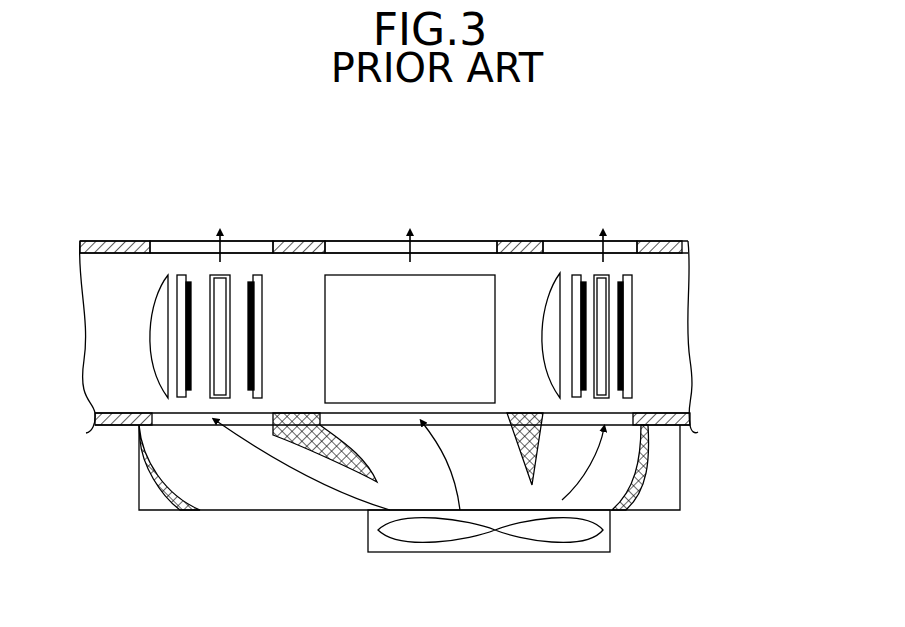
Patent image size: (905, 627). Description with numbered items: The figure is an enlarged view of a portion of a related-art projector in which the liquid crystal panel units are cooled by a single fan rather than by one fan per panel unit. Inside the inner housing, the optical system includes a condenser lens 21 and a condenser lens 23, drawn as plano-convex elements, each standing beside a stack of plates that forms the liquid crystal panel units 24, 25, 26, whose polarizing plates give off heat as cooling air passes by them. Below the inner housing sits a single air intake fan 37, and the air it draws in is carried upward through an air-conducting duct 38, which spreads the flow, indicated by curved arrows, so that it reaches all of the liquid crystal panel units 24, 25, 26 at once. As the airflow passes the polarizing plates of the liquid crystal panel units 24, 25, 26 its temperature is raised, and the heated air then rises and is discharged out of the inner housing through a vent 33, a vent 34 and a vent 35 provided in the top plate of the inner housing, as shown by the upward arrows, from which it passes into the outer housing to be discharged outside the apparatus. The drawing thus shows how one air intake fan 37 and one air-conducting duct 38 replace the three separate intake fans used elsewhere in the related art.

The condenser lens 21 is at (148, 332).
The condenser lens 23 is at (550, 325).
The liquid crystal panel unit 24 is at (265, 293).
The liquid crystal panel unit 25 is at (458, 296).
The liquid crystal panel unit 26 is at (636, 293).
The vent 33 is at (188, 245).
The vent 34 is at (380, 245).
The vent 35 is at (575, 245).
The air intake fan 37 is at (610, 534).
The air-conducting duct 38 is at (680, 462).